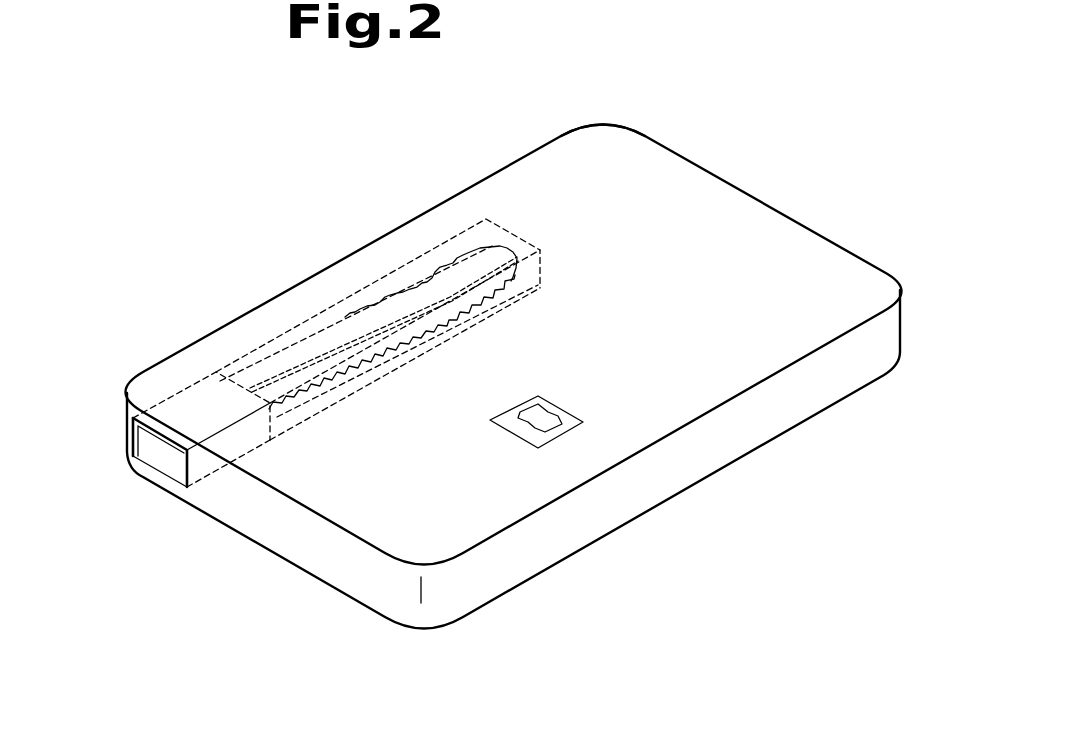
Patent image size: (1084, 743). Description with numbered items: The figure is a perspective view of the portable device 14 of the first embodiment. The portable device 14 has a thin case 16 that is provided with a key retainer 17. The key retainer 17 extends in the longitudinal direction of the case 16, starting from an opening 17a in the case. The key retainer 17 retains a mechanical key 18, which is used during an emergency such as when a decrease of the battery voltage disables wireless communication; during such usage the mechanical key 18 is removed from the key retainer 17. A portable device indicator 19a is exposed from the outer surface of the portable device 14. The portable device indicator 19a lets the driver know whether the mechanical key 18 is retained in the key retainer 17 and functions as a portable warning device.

The portable device 14 is at (738, 124).
The case 16 is at (513, 157).
The key retainer 17 is at (387, 273).
The opening 17a is at (165, 470).
The mechanical key 18 is at (283, 342).
The portable device indicator 19a is at (565, 405).